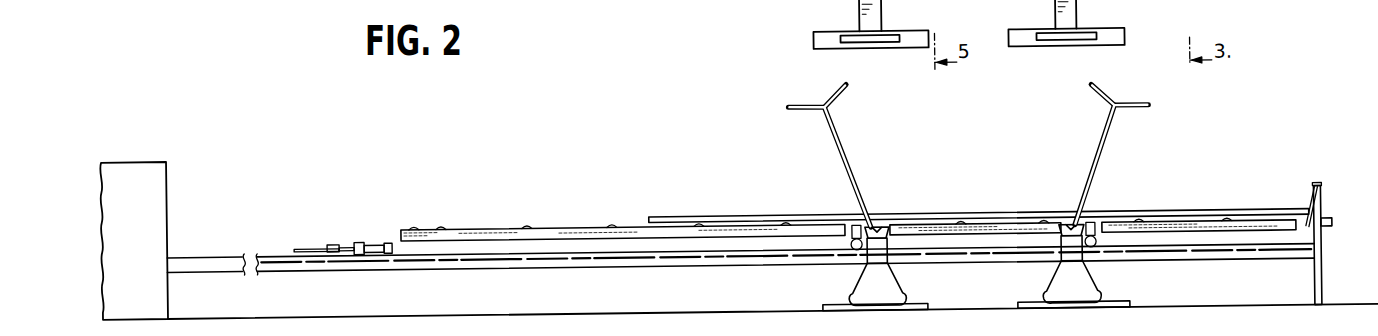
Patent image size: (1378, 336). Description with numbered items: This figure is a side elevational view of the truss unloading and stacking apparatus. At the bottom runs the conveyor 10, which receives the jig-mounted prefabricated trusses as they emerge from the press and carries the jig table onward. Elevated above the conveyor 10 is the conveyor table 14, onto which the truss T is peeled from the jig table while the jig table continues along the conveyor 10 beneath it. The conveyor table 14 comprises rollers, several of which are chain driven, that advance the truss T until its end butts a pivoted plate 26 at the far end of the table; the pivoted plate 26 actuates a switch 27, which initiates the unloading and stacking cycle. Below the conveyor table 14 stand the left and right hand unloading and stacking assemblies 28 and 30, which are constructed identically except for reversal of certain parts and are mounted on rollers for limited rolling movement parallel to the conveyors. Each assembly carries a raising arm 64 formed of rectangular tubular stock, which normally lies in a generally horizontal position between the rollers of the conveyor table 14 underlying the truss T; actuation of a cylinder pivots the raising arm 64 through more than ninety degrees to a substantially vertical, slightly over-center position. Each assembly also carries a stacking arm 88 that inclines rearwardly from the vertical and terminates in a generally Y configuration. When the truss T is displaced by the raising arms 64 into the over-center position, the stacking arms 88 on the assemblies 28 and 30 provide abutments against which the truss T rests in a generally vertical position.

The conveyor 10 is at (285, 273).
The conveyor table 14 is at (511, 216).
The pivoted plate 26 is at (1312, 220).
The switch 27 is at (1334, 238).
The left hand unloading and stacking assembly 28 is at (890, 254).
The right hand unloading and stacking assembly 30 is at (1060, 256).
The raising arm 64 is at (855, 238).
The stacking arm 88 is at (1094, 178).
The truss T is at (998, 223).